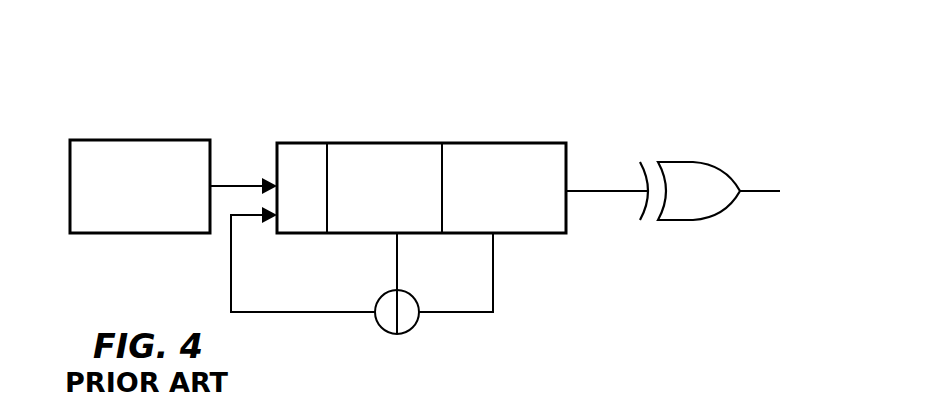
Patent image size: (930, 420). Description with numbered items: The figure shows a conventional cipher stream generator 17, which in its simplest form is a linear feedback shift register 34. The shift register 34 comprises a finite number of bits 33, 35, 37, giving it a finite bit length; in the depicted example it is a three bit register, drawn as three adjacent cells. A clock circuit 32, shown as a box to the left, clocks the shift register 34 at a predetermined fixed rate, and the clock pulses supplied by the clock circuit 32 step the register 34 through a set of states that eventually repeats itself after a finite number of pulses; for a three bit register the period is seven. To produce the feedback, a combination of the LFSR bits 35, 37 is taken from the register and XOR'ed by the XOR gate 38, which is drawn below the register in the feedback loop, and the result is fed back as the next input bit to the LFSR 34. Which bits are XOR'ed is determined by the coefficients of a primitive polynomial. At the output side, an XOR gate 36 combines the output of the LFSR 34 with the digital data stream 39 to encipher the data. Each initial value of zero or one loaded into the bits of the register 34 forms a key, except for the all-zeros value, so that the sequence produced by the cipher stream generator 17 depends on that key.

The cipher stream generator 17 is at (648, 53).
The clock circuit 32 is at (145, 140).
The bit 33 is at (303, 145).
The linear feedback shift register 34 is at (434, 126).
The bit 35 is at (423, 146).
The XOR gate 36 is at (712, 165).
The bit 37 is at (513, 148).
The XOR gate 38 is at (412, 327).
The digital data stream 39 is at (643, 207).